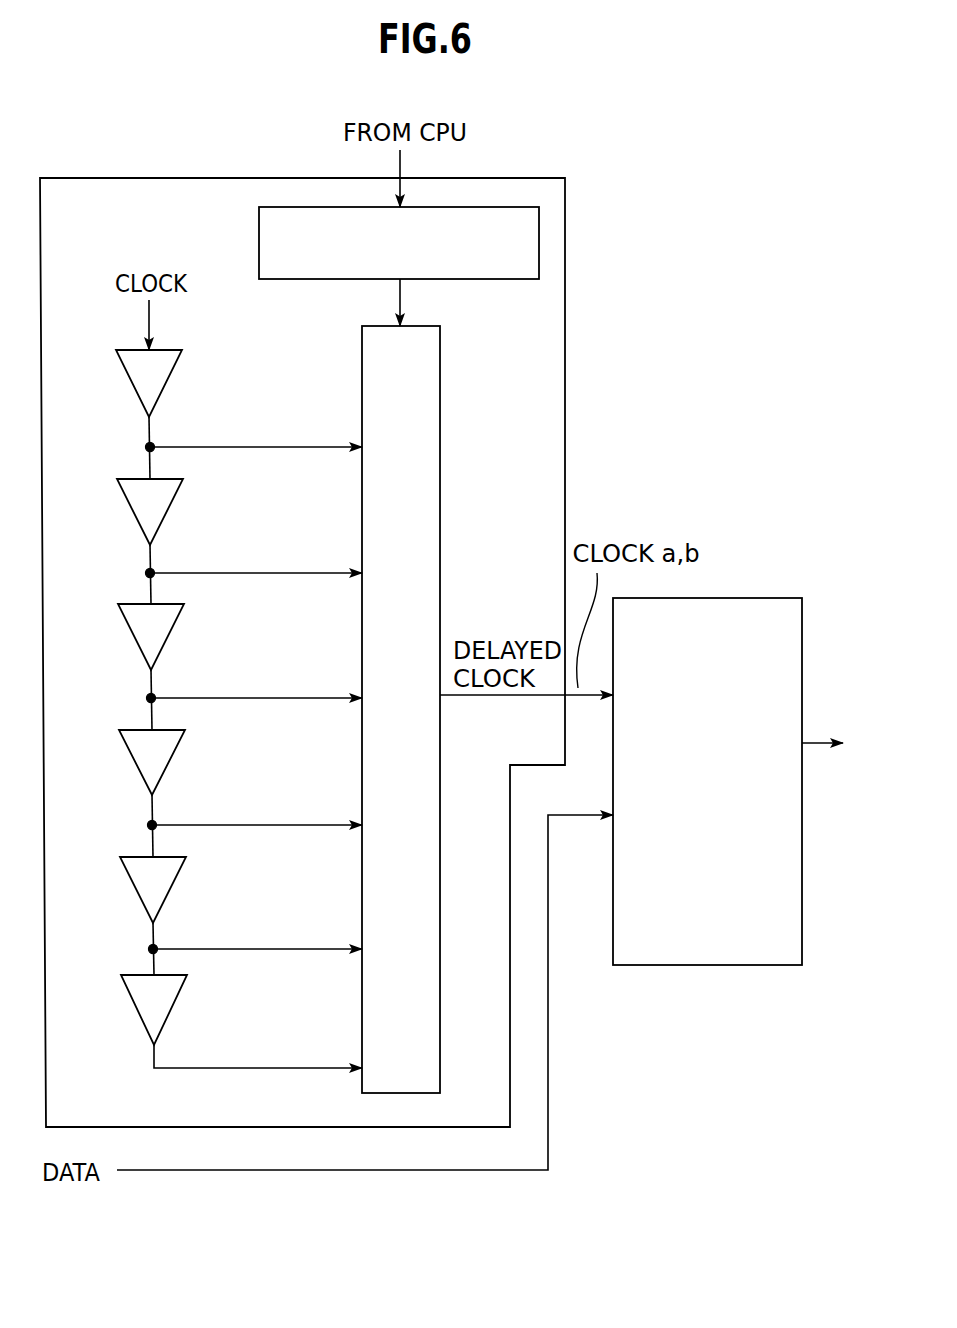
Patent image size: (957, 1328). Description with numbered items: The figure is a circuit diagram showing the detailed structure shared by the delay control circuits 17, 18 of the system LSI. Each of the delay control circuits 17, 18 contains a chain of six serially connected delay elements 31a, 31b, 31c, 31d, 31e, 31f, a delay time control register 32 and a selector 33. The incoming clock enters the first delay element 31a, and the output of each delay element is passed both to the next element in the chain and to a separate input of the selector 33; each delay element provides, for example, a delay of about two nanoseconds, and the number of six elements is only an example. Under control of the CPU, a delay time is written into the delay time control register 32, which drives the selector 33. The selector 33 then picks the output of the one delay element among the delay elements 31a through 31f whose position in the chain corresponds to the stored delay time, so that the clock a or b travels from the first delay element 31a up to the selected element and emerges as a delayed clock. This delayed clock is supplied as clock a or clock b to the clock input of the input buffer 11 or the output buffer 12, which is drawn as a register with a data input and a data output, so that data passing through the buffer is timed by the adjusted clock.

The input buffer 11 is at (707, 741).
The output buffer 12 is at (738, 597).
The delay control circuit 17 is at (365, 652).
The delay control circuit 18 is at (565, 313).
The delay element 31a is at (168, 382).
The delay element 31b is at (169, 511).
The delay element 31c is at (170, 637).
The delay element 31d is at (171, 762).
The delay element 31e is at (172, 889).
The delay element 31f is at (173, 1007).
The delay time control register 32 is at (470, 280).
The selector 33 is at (443, 391).